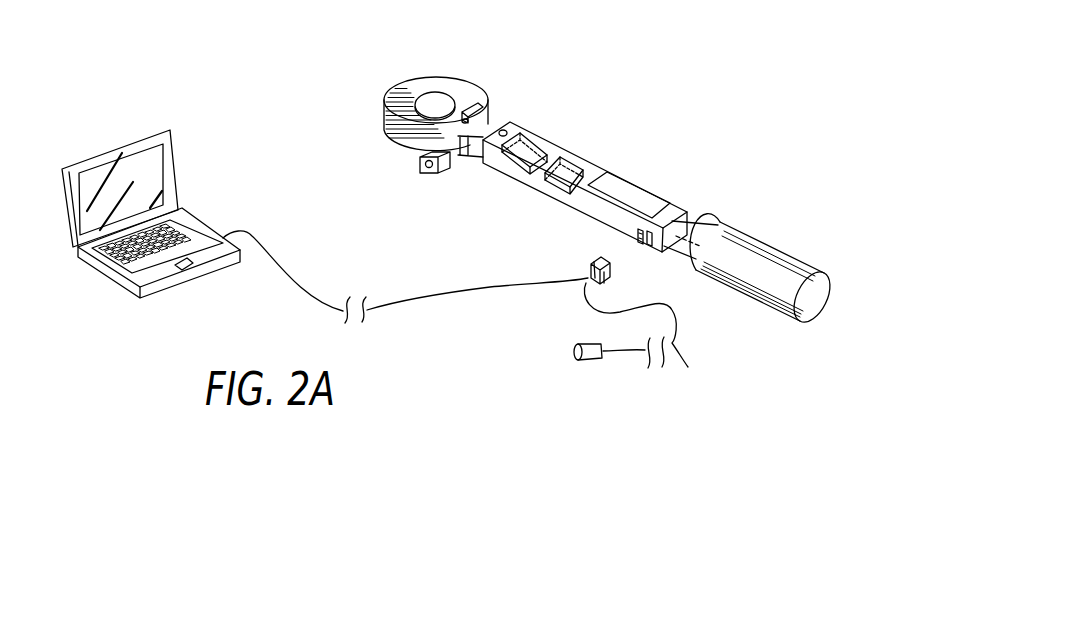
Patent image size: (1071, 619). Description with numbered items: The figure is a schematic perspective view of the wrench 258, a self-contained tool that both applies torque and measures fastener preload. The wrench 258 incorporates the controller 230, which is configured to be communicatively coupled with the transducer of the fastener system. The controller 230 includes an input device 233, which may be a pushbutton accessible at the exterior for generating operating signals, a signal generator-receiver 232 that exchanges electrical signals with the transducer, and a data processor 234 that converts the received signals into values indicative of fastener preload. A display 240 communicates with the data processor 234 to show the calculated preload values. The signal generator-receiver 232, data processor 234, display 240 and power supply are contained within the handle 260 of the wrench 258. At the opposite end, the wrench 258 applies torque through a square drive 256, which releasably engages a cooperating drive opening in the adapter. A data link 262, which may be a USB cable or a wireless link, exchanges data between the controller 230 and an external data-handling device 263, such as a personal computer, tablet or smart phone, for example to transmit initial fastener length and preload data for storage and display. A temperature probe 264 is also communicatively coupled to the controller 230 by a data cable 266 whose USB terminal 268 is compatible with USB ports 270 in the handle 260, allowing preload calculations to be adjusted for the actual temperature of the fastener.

The wrench 258 is at (677, 83).
The controller 230 is at (693, 190).
The signal generator-receiver 232 is at (530, 139).
The input device 233 is at (503, 128).
The data processor 234 is at (563, 158).
The display 240 is at (637, 198).
The square drive 256 is at (451, 160).
The handle 260 is at (743, 250).
The data link 262 is at (405, 305).
The external data-handling device 263 is at (178, 191).
The temperature probe 264 is at (580, 361).
The data cable 266 is at (688, 367).
The USB terminal 268 is at (608, 278).
The USB ports 270 is at (636, 233).